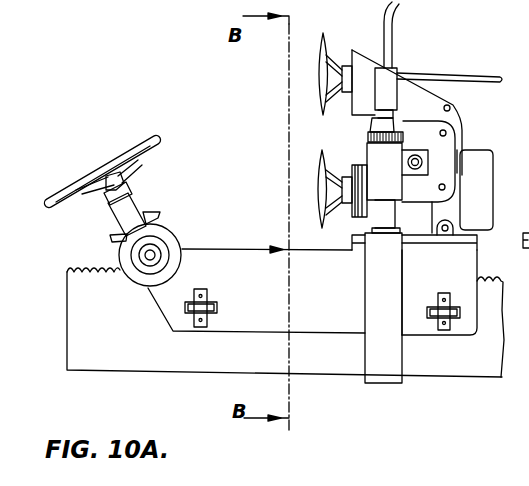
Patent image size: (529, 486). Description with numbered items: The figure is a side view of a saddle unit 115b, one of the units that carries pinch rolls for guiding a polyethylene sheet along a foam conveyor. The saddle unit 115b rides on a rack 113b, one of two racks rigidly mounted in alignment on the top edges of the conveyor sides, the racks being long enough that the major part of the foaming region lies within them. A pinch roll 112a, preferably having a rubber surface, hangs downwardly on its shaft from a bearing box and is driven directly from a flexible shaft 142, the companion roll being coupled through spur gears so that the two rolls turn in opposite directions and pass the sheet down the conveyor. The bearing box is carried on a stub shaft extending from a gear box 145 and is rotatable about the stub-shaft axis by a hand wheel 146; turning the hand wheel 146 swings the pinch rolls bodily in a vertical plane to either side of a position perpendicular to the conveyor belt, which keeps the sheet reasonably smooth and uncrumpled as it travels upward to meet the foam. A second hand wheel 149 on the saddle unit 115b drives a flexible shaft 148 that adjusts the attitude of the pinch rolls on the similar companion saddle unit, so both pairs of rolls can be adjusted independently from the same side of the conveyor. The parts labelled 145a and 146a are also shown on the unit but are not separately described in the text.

The pinch roll 112a is at (385, 380).
The rack 113b is at (151, 369).
The saddle unit 115b is at (267, 240).
The flexible shaft 142 is at (392, 22).
The gear box 145 is at (452, 147).
The motor 145a is at (494, 183).
The hand wheel 146 is at (321, 161).
The handwheel shaft 146a is at (515, 226).
The flexible shaft 148 is at (480, 78).
The hand wheel 149 is at (330, 24).